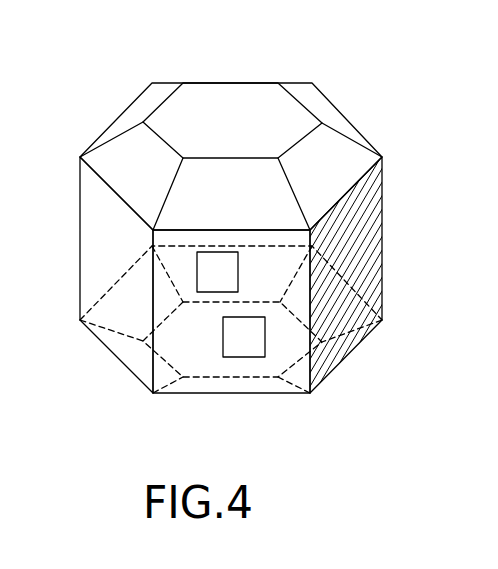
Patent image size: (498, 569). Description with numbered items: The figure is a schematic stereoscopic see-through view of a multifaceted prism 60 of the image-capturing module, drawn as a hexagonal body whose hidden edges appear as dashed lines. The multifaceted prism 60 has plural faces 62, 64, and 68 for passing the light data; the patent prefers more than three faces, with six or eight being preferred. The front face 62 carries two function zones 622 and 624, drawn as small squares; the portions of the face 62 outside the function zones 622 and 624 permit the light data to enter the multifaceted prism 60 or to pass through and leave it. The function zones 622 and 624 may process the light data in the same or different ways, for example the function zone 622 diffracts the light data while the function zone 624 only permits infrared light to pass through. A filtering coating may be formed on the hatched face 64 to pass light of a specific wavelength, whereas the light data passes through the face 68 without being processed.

The multifaceted prism 60 is at (344, 33).
The face 62 is at (245, 387).
The face 64 is at (348, 347).
The face 68 is at (87, 217).
The function zone 622 is at (207, 277).
The function zone 624 is at (238, 337).